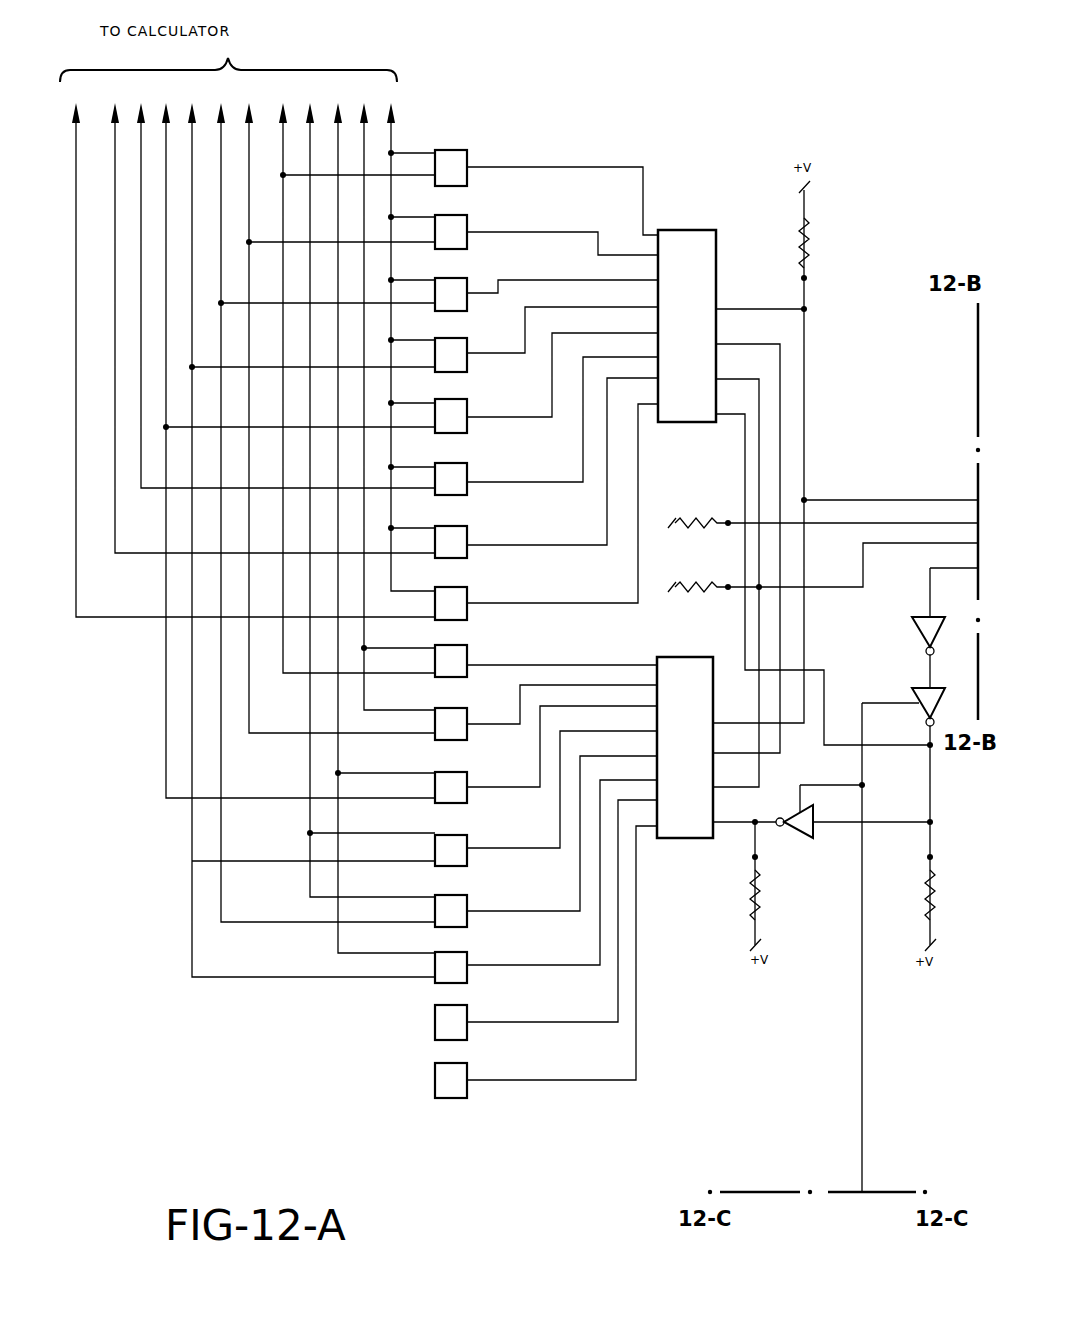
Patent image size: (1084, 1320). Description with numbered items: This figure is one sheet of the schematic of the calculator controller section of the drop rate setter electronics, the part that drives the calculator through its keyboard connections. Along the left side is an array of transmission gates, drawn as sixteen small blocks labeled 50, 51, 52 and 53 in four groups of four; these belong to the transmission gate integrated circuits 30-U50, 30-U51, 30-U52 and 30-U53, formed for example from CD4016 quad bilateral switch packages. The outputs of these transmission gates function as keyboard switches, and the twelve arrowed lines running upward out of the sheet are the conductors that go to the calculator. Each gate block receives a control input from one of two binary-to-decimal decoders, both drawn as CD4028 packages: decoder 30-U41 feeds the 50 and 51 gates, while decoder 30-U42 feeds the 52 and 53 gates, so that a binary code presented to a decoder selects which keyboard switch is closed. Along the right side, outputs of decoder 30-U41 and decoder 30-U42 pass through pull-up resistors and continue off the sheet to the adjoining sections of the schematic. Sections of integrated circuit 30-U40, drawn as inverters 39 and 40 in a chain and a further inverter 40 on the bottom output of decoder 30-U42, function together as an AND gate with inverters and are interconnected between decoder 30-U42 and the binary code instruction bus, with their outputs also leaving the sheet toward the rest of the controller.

The transmission gate 50 is at (546, 261).
The transmission gate 51 is at (546, 476).
The transmission gate 52 is at (546, 755).
The transmission gate 53 is at (546, 927).
The inverter 39 is at (928, 636).
The inverter section of integrated circuit 30-U40 40 is at (860, 763).
The transmission gate integrated circuit 30-U50 is at (481, 210).
The transmission gate integrated circuit 30-U51 is at (467, 423).
The transmission gate integrated circuit 30-U52 is at (480, 702).
The transmission gate integrated circuit 30-U53 is at (435, 1080).
The binary-to-decimal decoder 30-U41 is at (703, 230).
The binary-to-decimal decoder 30-U42 is at (705, 657).
The integrated circuit 30-U40 is at (857, 741).